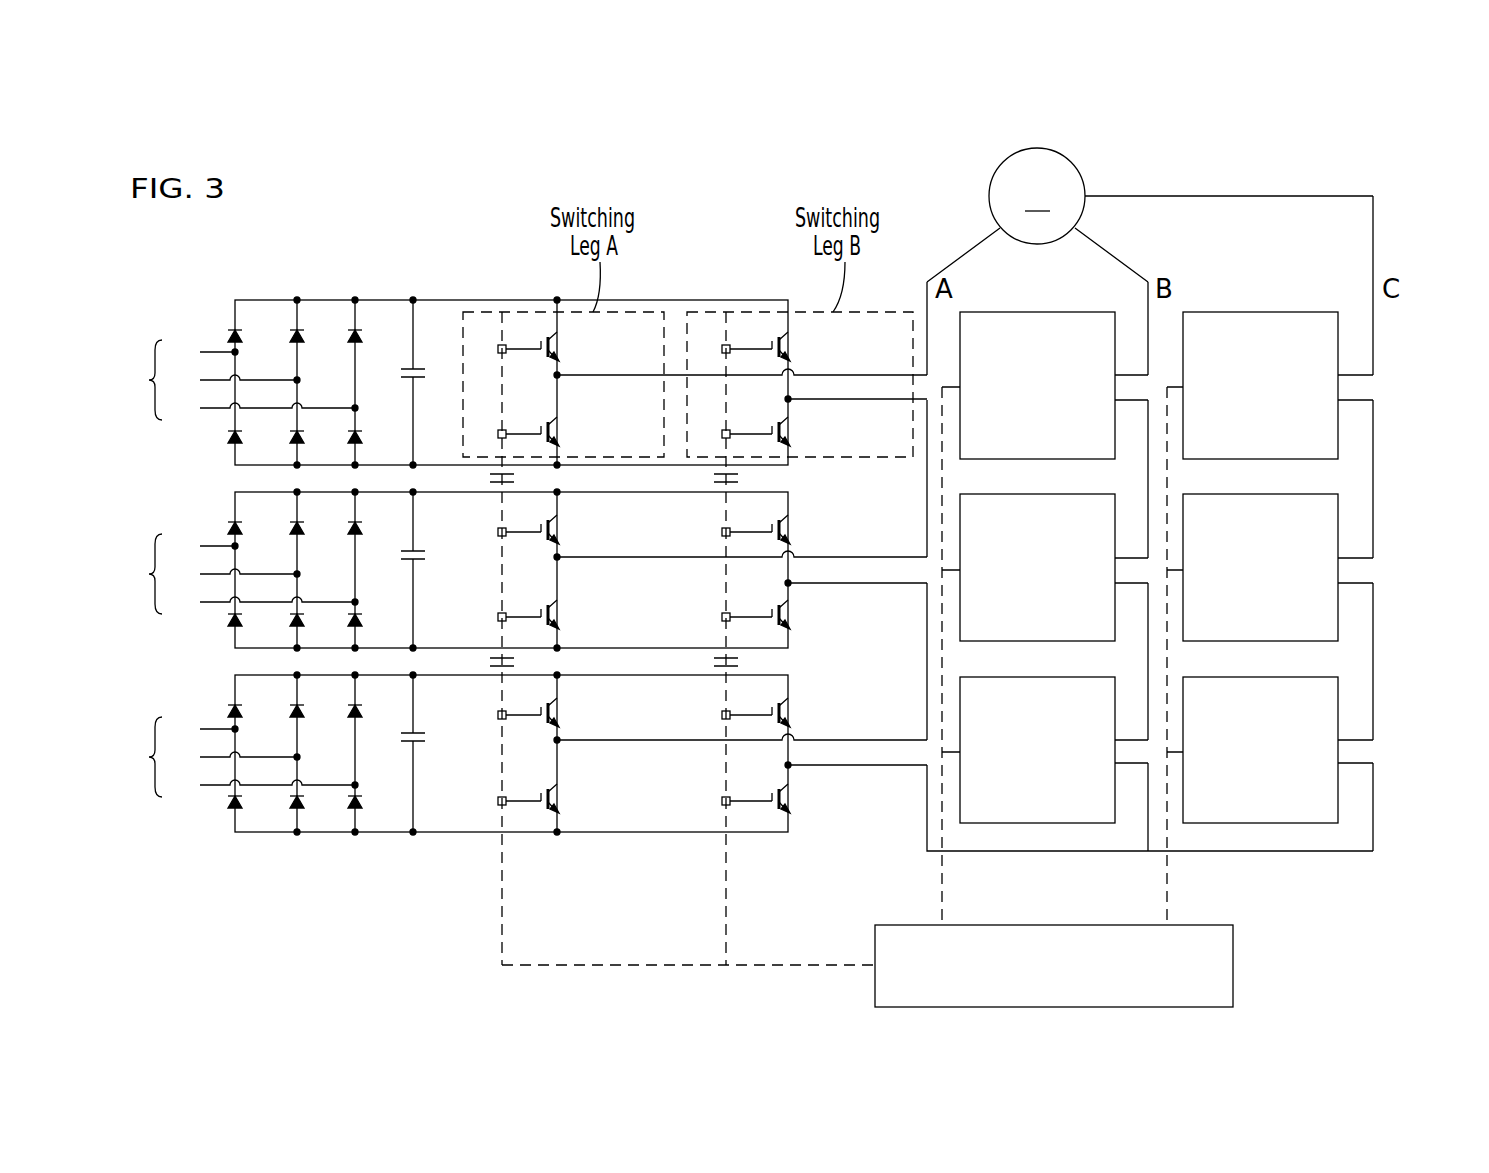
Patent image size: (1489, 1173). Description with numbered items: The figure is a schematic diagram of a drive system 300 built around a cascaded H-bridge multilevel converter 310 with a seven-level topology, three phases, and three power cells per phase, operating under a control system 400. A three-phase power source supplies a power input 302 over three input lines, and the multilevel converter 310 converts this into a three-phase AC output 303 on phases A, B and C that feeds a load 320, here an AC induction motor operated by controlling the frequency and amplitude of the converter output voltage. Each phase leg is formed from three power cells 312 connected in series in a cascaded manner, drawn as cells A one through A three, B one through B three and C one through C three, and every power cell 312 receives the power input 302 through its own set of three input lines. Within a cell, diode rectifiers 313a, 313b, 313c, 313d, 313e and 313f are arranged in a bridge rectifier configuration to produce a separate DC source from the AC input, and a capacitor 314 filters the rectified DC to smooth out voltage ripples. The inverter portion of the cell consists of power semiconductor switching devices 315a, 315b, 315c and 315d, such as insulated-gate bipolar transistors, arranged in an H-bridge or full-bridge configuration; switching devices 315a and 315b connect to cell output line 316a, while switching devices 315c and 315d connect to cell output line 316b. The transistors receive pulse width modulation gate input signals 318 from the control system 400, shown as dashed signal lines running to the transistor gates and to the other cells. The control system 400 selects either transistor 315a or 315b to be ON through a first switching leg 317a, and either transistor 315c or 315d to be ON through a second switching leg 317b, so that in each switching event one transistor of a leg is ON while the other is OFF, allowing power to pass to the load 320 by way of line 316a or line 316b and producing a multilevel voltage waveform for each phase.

The drive system 300 is at (425, 232).
The power input 302 is at (149, 380).
The output 303 is at (962, 257).
The cascaded H-bridge multilevel converter 310 is at (1395, 445).
The power cell 312 is at (1058, 360).
The diode rectifier 313a is at (233, 331).
The diode rectifier 313b is at (292, 329).
The diode rectifier 313c is at (350, 329).
The diode rectifier 313d is at (233, 434).
The diode rectifier 313e is at (292, 431).
The diode rectifier 313f is at (350, 431).
The capacitor 314 is at (410, 367).
The power semiconductor switching device 315a is at (549, 341).
The power semiconductor switching device 315b is at (561, 425).
The power semiconductor switching device 315c is at (780, 341).
The power semiconductor switching device 315d is at (792, 425).
The cell output line 316a is at (838, 375).
The cell output line 316b is at (838, 400).
The first switching leg 317a is at (476, 715).
The second switching leg 317b is at (700, 715).
The gate input signals 318 is at (503, 914).
The load 320 is at (992, 191).
The control system 400 is at (1233, 970).